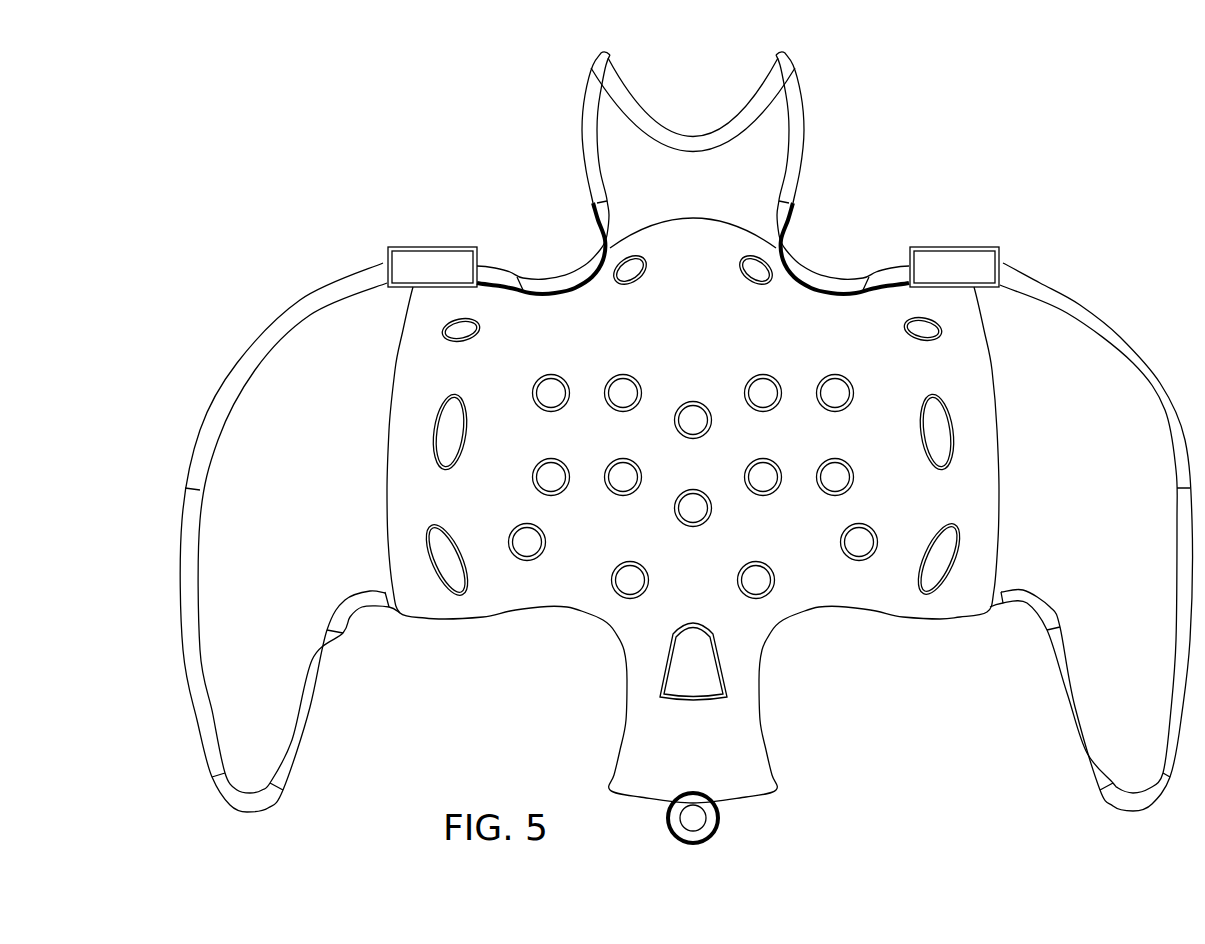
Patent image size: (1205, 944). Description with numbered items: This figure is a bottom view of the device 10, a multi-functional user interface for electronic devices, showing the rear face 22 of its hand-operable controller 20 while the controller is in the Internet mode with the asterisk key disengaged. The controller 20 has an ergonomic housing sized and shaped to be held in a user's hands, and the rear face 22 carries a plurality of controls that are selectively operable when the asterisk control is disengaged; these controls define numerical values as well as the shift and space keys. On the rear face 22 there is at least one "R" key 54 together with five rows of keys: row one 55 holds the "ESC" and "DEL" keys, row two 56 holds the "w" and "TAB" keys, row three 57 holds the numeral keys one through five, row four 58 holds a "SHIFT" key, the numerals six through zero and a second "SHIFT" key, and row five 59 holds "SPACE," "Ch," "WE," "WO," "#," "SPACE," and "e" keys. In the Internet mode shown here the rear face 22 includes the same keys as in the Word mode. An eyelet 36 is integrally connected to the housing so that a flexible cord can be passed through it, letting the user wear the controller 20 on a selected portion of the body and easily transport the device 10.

The device 10 is at (952, 95).
The hand-operable controller 20 is at (1073, 293).
The rear face 22 is at (837, 317).
The eyelet 36 is at (693, 843).
The "R" key 54 is at (430, 248).
The row one 55 is at (753, 258).
The row two 56 is at (450, 330).
The row three 57 is at (692, 400).
The row four 58 is at (933, 433).
The row five 59 is at (515, 635).